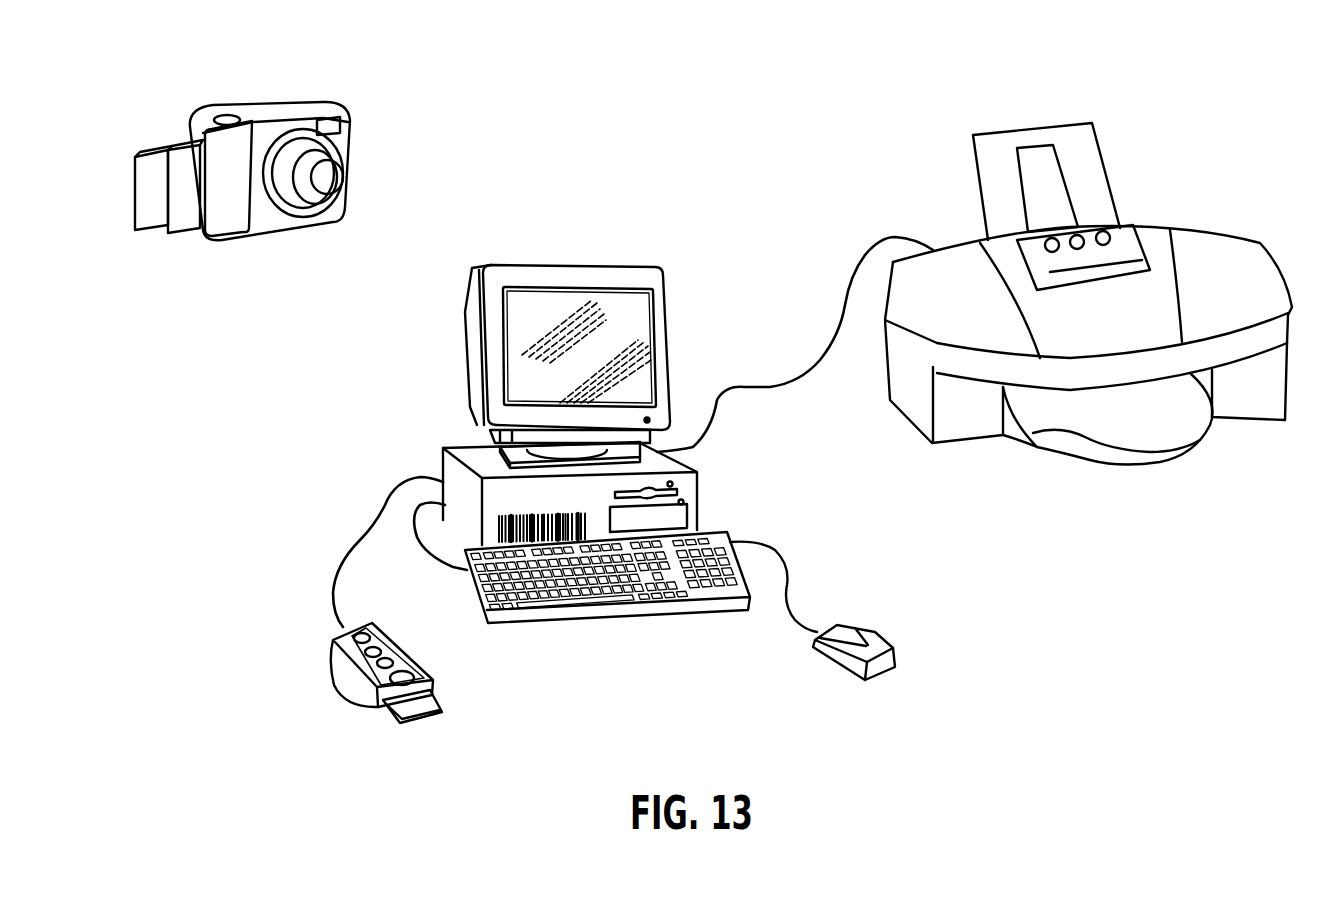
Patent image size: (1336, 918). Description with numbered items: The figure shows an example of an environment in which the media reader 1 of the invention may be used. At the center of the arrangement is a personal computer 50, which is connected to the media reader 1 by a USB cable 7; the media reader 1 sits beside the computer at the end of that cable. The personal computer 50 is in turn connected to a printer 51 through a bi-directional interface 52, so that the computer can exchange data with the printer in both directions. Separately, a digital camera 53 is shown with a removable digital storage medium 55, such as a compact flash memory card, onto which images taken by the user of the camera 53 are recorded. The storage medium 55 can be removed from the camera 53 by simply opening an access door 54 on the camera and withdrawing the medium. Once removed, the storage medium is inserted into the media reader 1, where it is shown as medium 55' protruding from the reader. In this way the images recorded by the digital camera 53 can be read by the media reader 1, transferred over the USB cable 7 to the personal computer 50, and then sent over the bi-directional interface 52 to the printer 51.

The media reader 1 is at (330, 660).
The USB cable 7 is at (385, 507).
The personal computer 50 is at (453, 367).
The printer 51 is at (1252, 219).
The bi-directional interface 52 is at (815, 360).
The digital camera 53 is at (292, 107).
The access door 54 is at (180, 228).
The removable digital storage medium 55 is at (115, 188).
The storage medium inserted into media reader 55' is at (454, 700).